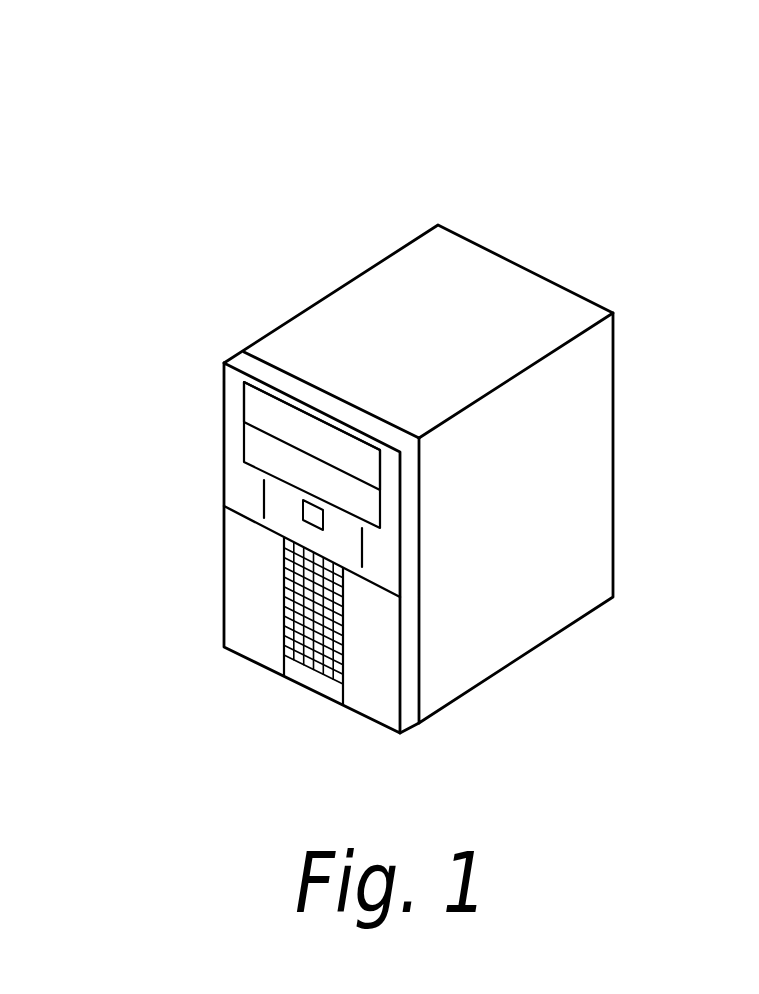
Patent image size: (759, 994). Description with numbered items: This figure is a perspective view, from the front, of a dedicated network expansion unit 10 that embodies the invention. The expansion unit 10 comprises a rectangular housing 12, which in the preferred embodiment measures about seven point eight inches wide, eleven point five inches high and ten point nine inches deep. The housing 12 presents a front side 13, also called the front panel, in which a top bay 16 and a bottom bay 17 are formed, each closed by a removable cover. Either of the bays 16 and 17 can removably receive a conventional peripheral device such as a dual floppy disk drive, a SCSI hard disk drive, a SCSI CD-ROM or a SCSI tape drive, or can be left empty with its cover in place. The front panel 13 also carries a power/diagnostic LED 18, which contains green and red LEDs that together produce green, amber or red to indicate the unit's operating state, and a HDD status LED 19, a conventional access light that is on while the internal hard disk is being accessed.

The dedicated network expansion unit 10 is at (577, 189).
The housing 12 is at (450, 479).
The front side 13 is at (296, 611).
The top bay 16 is at (268, 436).
The bottom bay 17 is at (256, 456).
The power/diagnostic light emitting diode 18 is at (198, 517).
The HDD status LED 19 is at (431, 549).